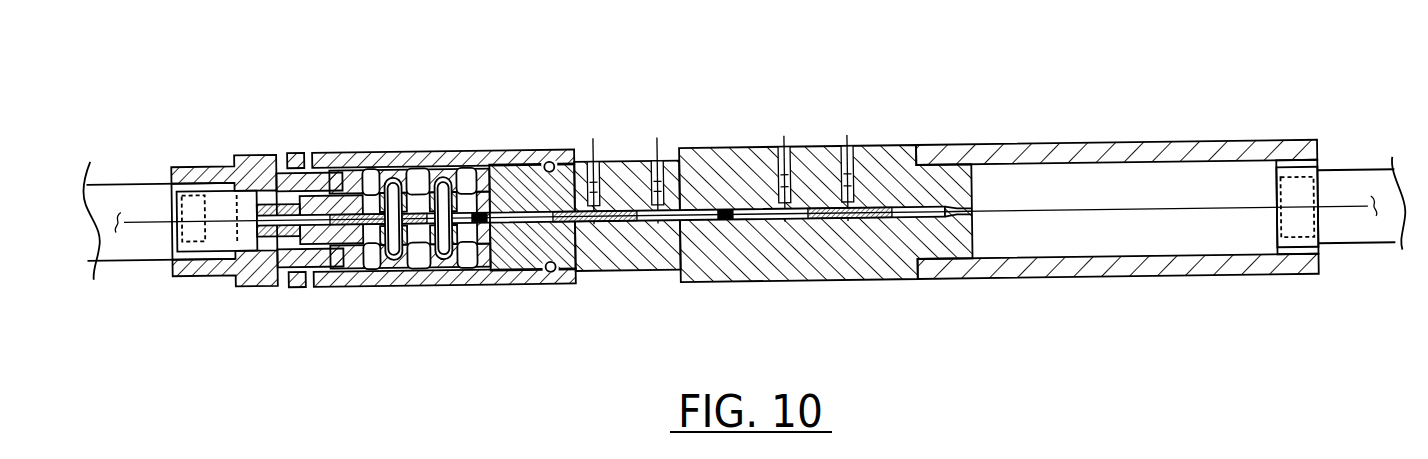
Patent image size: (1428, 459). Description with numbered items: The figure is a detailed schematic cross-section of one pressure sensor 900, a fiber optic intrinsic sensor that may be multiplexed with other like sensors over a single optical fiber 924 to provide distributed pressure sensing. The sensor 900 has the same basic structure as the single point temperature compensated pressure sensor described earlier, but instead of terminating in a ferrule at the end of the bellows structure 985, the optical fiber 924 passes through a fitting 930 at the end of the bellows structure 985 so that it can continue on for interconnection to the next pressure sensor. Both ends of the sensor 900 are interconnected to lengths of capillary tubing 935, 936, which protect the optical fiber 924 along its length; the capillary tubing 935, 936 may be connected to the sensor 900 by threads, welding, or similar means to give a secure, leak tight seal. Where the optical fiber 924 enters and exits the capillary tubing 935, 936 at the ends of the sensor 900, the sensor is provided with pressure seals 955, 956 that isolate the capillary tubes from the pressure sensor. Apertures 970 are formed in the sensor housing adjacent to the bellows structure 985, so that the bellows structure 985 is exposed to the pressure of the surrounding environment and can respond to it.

The pressure sensor 900 is at (885, 140).
The optical fiber 924 is at (1072, 210).
The fitting 930 is at (267, 260).
The capillary tubing 935 is at (1350, 168).
The capillary tubing 936 is at (132, 184).
The pressure seal 955 is at (1297, 190).
The pressure seal 956 is at (191, 200).
The apertures 970 is at (285, 148).
The bellows structure 985 is at (398, 175).